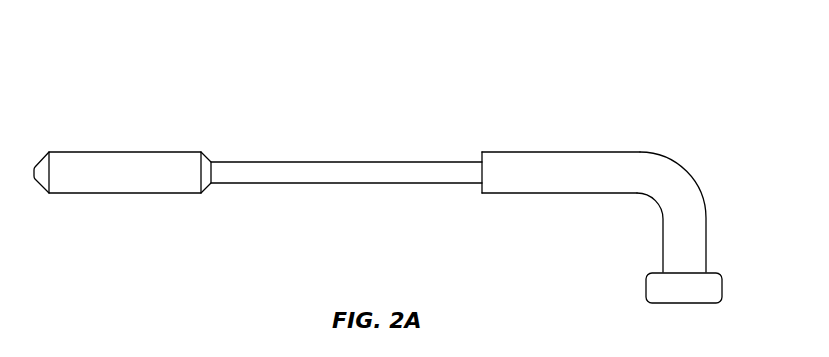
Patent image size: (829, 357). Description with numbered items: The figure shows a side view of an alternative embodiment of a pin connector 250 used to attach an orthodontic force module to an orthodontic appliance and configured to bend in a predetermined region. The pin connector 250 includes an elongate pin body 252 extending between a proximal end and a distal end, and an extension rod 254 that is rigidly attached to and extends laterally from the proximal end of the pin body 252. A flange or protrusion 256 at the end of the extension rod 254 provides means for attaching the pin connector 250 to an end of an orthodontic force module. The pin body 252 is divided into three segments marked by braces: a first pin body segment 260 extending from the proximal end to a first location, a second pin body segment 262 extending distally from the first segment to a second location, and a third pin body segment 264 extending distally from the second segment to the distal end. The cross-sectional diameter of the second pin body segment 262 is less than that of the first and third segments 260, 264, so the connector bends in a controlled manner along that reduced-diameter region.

The pin connector 250 is at (128, 45).
The third pin body segment 264 is at (210, 138).
The second pin body segment 262 is at (480, 138).
The first pin body segment 260 is at (717, 138).
The pin body 252 is at (557, 188).
The extension rod 254 is at (689, 237).
The flange or protrusion 256 is at (693, 302).